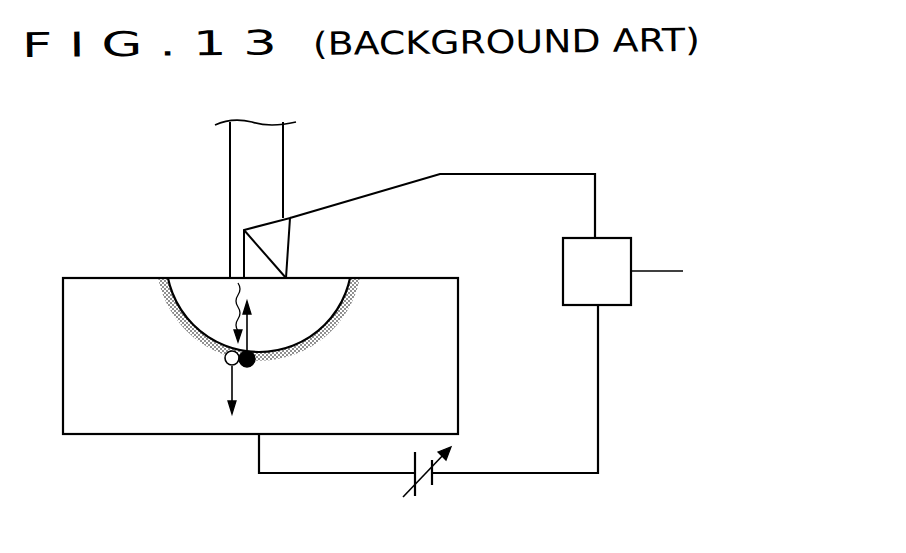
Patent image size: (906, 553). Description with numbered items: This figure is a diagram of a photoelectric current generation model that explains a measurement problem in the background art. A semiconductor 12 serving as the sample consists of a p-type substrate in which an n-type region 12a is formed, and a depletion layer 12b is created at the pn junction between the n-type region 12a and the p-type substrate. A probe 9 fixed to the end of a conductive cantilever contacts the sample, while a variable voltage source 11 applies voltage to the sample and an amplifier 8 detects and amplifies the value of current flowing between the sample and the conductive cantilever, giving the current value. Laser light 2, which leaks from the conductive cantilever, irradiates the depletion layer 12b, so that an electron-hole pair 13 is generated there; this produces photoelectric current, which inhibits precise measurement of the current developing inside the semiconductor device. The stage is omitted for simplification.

The laser light 2 is at (265, 167).
The amplifier 8 is at (620, 238).
The probe 9 is at (280, 243).
The variable voltage source 11 is at (437, 482).
The semiconductor 12 is at (452, 386).
The n-type region 12a is at (196, 290).
The depletion layer 12b is at (345, 318).
The electron-hole pair 13 is at (222, 360).